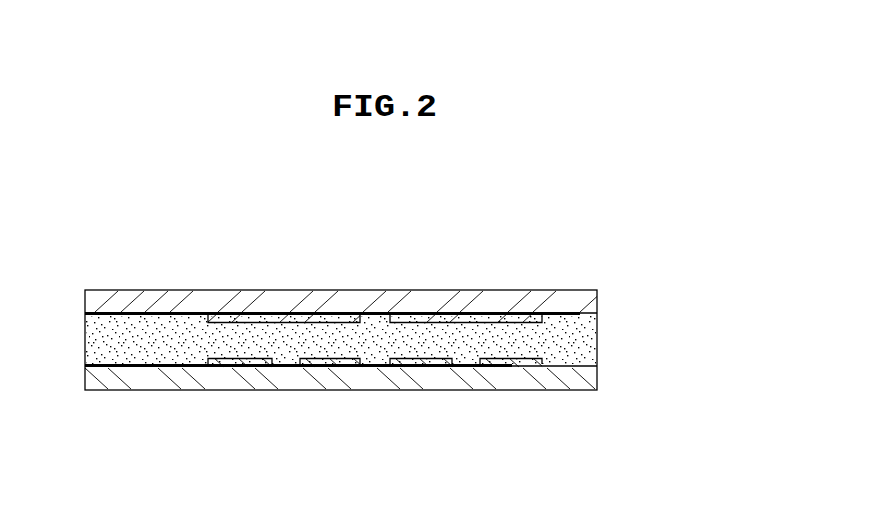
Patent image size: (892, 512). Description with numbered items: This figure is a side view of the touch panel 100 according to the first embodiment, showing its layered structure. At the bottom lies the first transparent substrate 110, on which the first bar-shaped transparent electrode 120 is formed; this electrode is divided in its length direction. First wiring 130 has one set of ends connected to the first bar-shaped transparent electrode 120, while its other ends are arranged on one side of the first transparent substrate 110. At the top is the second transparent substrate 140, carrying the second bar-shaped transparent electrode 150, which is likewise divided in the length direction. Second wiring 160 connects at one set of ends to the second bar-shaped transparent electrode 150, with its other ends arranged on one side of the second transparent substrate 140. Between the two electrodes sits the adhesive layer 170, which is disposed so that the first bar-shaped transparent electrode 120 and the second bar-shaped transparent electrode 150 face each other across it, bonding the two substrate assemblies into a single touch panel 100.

The touch panel 100 is at (110, 233).
The first transparent substrate 110 is at (577, 375).
The first bar-shaped transparent electrode 120 is at (520, 365).
The first wiring 130 is at (475, 365).
The second transparent substrate 140 is at (577, 305).
The second bar-shaped transparent electrode 150 is at (471, 312).
The second wiring 160 is at (557, 313).
The adhesive layer 170 is at (577, 337).